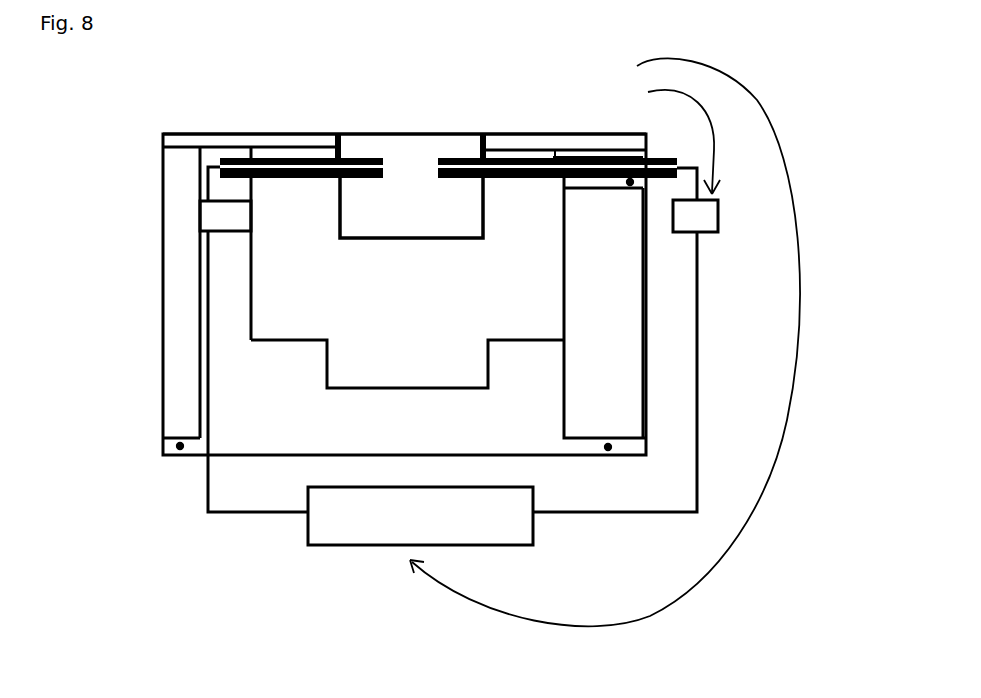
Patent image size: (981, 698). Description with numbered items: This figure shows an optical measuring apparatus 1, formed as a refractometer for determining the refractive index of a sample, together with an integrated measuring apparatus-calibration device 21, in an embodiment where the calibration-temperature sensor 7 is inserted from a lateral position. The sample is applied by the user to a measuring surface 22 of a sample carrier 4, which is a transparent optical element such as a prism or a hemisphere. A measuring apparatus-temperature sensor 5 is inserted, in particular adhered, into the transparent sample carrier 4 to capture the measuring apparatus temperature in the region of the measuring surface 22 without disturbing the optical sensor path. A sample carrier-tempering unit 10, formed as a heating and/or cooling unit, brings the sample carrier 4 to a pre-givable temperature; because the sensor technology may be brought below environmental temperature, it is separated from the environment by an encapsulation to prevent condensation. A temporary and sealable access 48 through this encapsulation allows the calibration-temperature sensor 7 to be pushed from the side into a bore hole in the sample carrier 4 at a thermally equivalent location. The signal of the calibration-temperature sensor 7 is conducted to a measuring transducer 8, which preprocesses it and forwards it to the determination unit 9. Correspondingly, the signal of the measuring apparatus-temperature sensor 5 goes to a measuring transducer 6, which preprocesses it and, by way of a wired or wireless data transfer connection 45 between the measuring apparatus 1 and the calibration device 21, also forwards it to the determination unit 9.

The optical measuring apparatus 1 is at (68, 132).
The sample carrier 4 is at (455, 148).
The measuring apparatus-temperature sensor 5 is at (360, 157).
The measuring transducer 6 is at (217, 216).
The calibration-temperature sensor 7 is at (470, 160).
The measuring transducer 8 is at (720, 220).
The determination unit 9 is at (457, 522).
The sample carrier-tempering unit 10 is at (465, 367).
The measuring apparatus-calibration device 21 is at (533, 152).
The measuring surface 22 is at (384, 133).
The data transfer connection 45 is at (208, 488).
The temporary and sealable access 48 is at (645, 157).